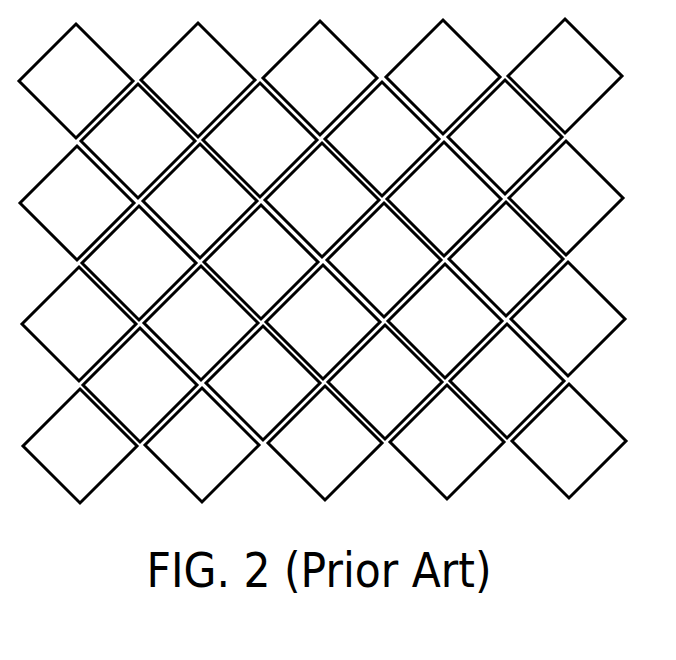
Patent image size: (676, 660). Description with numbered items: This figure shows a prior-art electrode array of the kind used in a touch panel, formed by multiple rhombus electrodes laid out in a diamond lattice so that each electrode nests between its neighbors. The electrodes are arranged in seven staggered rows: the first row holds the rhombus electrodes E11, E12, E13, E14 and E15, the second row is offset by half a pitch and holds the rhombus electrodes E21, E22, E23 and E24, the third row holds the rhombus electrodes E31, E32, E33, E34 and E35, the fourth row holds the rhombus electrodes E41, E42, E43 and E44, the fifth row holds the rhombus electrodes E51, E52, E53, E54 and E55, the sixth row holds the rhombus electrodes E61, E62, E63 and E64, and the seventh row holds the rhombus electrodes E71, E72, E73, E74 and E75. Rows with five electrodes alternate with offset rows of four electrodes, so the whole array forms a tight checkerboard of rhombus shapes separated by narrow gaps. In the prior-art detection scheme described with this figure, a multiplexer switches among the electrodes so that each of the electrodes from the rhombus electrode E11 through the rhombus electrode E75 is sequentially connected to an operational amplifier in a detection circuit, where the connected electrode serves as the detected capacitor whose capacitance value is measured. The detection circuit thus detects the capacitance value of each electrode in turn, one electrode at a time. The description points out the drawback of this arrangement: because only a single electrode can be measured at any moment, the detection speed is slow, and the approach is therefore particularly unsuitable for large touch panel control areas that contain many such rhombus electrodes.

The rhombus electrode E11 is at (76, 81).
The rhombus electrode E12 is at (198, 80).
The rhombus electrode E13 is at (320, 78).
The rhombus electrode E14 is at (443, 77).
The rhombus electrode E15 is at (565, 76).
The rhombus electrode E21 is at (138, 141).
The rhombus electrode E22 is at (260, 140).
The rhombus electrode E23 is at (382, 139).
The rhombus electrode E24 is at (505, 137).
The rhombus electrode E31 is at (77, 203).
The rhombus electrode E32 is at (200, 201).
The rhombus electrode E33 is at (322, 200).
The rhombus electrode E34 is at (444, 199).
The rhombus electrode E35 is at (566, 198).
The rhombus electrode E41 is at (139, 263).
The rhombus electrode E42 is at (261, 262).
The rhombus electrode E43 is at (384, 260).
The rhombus electrode E44 is at (506, 259).
The rhombus electrode E51 is at (79, 324).
The rhombus electrode E52 is at (201, 323).
The rhombus electrode E53 is at (323, 322).
The rhombus electrode E54 is at (445, 321).
The rhombus electrode E55 is at (568, 319).
The rhombus electrode E61 is at (140, 385).
The rhombus electrode E62 is at (263, 383).
The rhombus electrode E63 is at (385, 382).
The rhombus electrode E64 is at (507, 381).
The rhombus electrode E71 is at (80, 446).
The rhombus electrode E72 is at (202, 445).
The rhombus electrode E73 is at (325, 443).
The rhombus electrode E74 is at (447, 442).
The rhombus electrode E75 is at (569, 441).